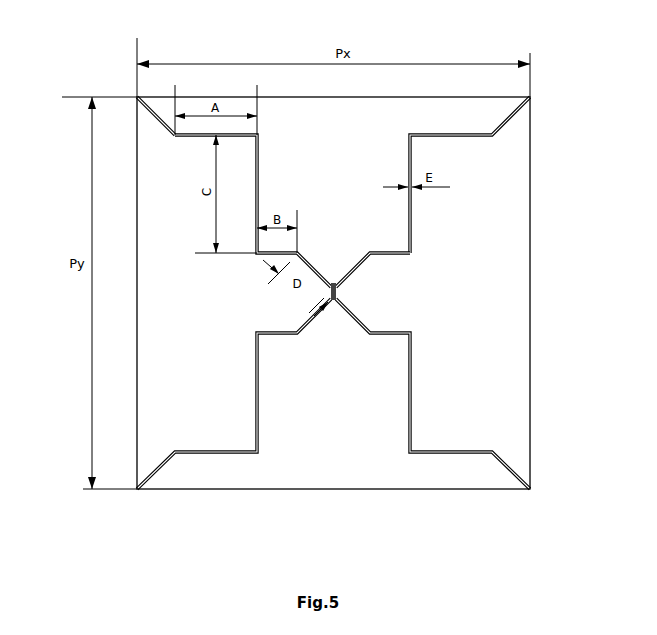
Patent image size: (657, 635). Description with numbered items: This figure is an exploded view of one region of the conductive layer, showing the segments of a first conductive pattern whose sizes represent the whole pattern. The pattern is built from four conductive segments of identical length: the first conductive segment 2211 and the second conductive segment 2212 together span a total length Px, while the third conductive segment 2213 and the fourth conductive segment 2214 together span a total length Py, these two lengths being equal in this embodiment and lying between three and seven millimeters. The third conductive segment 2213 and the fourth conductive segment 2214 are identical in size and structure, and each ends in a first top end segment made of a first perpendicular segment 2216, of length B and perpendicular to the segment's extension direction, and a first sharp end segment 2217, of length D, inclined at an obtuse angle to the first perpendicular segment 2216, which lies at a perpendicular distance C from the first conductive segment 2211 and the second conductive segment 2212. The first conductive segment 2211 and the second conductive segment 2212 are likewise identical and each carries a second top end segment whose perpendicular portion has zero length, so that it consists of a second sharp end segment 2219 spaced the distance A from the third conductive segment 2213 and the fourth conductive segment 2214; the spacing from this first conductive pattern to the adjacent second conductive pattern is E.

The first conductive segment 2211 is at (167, 103).
The second conductive segment 2212 is at (482, 113).
The third conductive segment 2213 is at (359, 363).
The fourth conductive segment 2214 is at (360, 205).
The first perpendicular segment 2216 is at (393, 259).
The first sharp end segment 2217 is at (365, 281).
The second sharp end segment 2219 is at (155, 121).